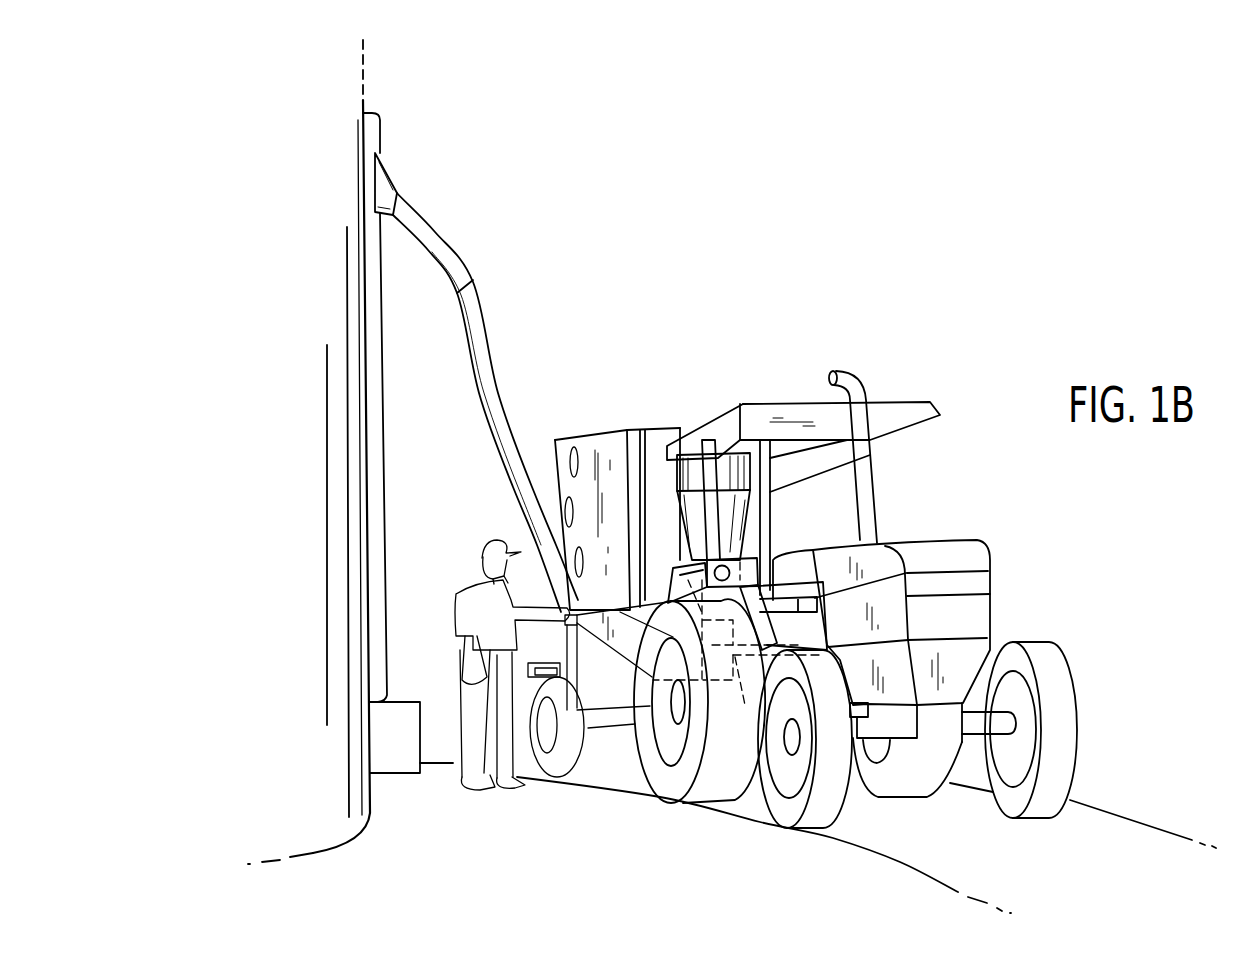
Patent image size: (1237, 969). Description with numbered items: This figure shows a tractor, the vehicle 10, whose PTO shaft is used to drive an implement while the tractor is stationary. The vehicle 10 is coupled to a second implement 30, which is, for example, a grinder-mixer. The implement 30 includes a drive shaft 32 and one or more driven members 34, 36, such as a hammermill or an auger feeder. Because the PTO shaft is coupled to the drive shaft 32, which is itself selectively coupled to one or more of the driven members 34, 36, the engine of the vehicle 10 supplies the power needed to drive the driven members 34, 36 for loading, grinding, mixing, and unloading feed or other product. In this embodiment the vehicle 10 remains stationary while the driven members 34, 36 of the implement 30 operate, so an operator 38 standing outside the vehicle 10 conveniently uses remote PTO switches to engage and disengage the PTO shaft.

The vehicle 10 is at (778, 400).
The second implement 30 is at (616, 430).
The drive shaft 32 is at (737, 648).
The driven member 34 is at (733, 525).
The driven member 36 is at (628, 613).
The operator 38 is at (478, 543).